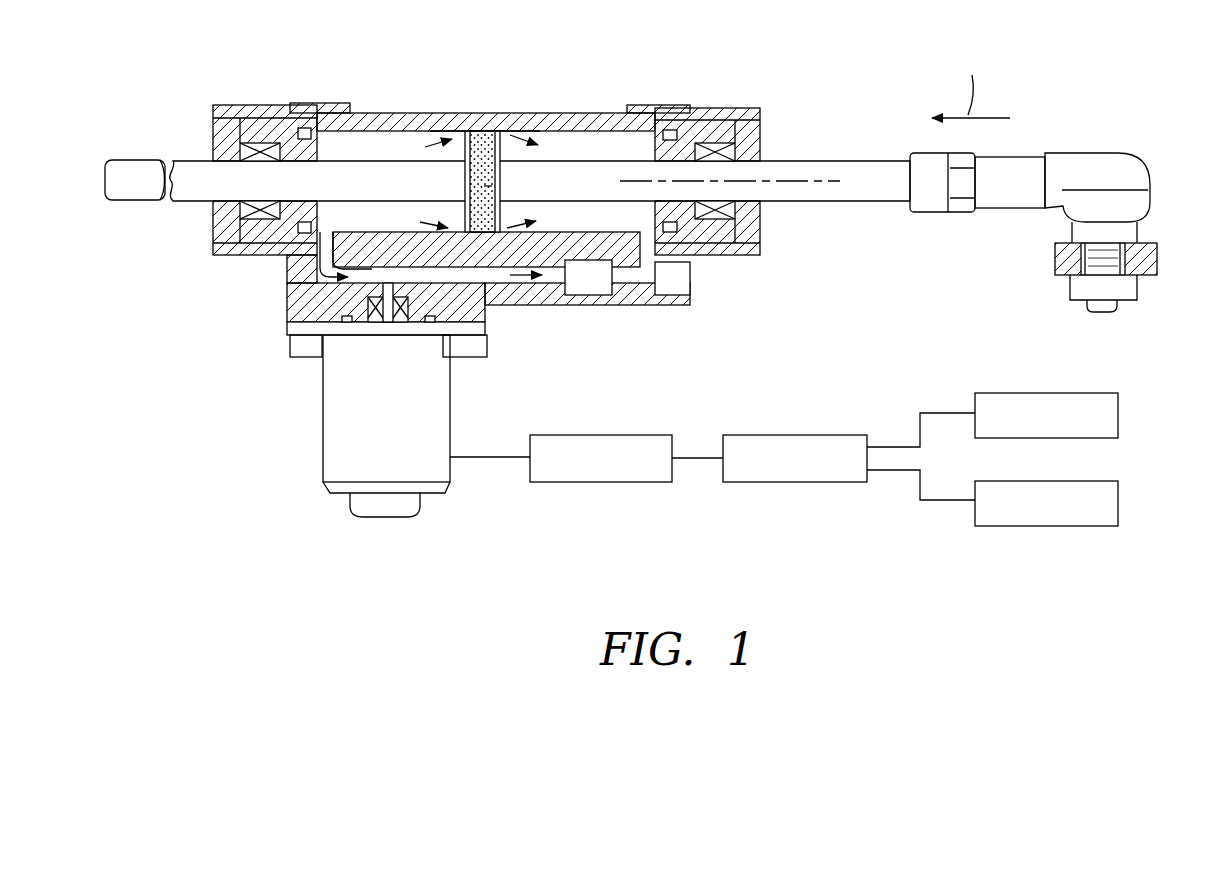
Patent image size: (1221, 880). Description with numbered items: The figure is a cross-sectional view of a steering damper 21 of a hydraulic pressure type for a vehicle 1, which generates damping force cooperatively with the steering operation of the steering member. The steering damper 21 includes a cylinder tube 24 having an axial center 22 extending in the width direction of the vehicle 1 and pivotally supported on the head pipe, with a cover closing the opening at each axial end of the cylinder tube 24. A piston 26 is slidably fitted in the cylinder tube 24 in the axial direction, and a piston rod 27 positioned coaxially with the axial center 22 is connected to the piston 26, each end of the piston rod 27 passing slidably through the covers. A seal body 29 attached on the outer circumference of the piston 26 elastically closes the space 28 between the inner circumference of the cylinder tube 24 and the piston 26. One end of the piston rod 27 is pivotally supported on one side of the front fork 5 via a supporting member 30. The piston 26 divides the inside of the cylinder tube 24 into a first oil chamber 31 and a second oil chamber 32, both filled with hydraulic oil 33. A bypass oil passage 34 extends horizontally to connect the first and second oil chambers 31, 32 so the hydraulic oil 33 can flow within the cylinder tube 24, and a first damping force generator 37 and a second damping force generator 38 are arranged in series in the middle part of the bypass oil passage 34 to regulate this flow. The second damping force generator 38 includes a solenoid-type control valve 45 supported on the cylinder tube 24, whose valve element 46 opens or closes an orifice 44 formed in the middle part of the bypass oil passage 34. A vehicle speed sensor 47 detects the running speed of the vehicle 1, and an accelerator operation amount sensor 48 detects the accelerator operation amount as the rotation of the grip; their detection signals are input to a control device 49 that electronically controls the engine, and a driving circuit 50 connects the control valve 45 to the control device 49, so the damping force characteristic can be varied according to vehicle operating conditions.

The vehicle 1 is at (1056, 78).
The steering damper 21 is at (860, 104).
The axial center 22 is at (845, 206).
The cylinder tube 24 is at (387, 117).
The piston 26 is at (458, 145).
The piston rod 27 is at (807, 168).
The space 28 is at (492, 135).
The seal body 29 is at (488, 192).
The supporting member 30 is at (1098, 314).
The first oil chamber 31 is at (340, 140).
The second oil chamber 32 is at (628, 150).
The hydraulic oil 33 is at (485, 270).
The bypass oil passage 34 is at (622, 282).
The first damping force generator 37 is at (594, 297).
The second damping force generator 38 is at (318, 447).
The orifice 44 is at (310, 298).
The control valve 45 is at (338, 400).
The valve element 46 is at (388, 323).
The vehicle speed sensor 47 is at (1059, 426).
The accelerator operation amount sensor 48 is at (1059, 514).
The control device 49 is at (809, 470).
The driving circuit 50 is at (614, 470).
The front fork 5 is at (1050, 262).